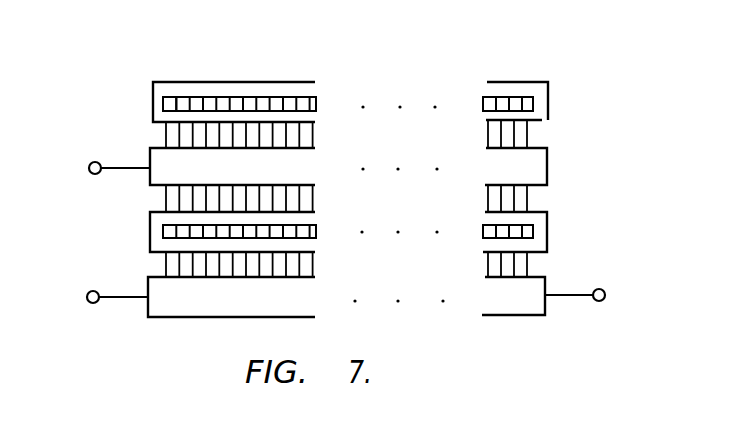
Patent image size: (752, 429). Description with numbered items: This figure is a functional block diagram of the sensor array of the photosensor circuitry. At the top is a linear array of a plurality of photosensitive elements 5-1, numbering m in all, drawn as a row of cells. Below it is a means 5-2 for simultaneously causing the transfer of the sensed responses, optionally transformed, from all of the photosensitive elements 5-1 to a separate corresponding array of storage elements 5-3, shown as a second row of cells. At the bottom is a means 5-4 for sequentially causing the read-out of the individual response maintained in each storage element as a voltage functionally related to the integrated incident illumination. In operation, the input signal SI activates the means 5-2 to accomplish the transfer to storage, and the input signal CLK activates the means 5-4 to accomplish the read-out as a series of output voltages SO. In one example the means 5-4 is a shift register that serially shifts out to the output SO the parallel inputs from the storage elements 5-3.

The photosensitive elements 5-1 is at (548, 82).
The transfer means 5-2 is at (547, 148).
The storage elements 5-3 is at (547, 212).
The read-out means 5-4 is at (545, 277).
The input signal SI is at (89, 164).
The clock input signal CLK is at (88, 293).
The output voltages SO is at (605, 291).